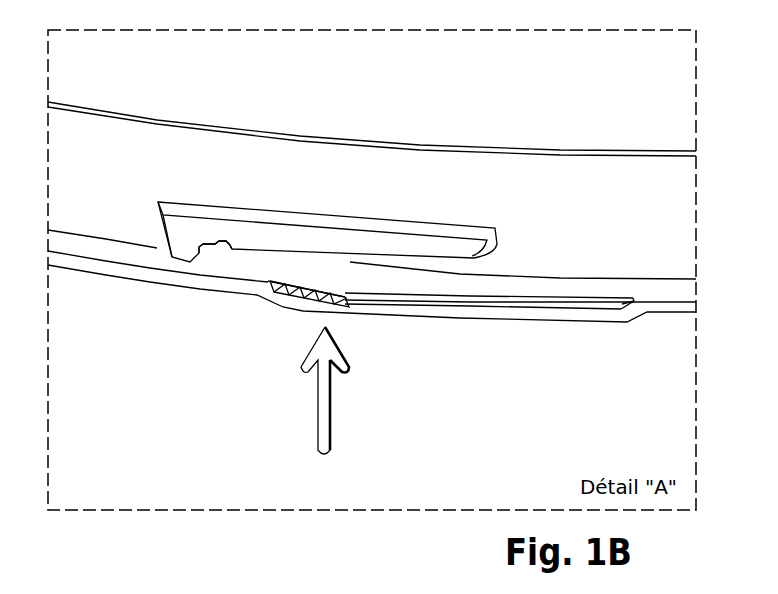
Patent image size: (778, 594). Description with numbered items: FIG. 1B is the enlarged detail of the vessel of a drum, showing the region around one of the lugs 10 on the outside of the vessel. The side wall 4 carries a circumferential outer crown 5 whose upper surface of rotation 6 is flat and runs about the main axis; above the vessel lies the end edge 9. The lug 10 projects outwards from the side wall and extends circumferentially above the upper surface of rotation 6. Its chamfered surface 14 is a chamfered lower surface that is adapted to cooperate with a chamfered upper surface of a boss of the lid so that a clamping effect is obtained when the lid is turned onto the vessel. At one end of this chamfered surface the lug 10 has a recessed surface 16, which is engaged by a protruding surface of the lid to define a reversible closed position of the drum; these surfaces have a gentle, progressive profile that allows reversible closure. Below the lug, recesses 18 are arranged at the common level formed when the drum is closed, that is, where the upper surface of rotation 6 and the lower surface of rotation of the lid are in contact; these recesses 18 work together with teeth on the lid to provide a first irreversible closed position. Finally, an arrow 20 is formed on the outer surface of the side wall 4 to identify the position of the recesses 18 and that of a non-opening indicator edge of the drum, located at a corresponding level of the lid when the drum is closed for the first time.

The side wall 4 is at (401, 198).
The circumferential outer crown 5 is at (88, 284).
The upper surface of rotation 6 is at (83, 247).
The end edge 9 is at (157, 118).
The lug 10 is at (233, 196).
The chamfered surface 14 is at (420, 271).
The recessed surface 16 is at (222, 253).
The recesses 18 is at (340, 312).
The arrow 20 is at (308, 426).